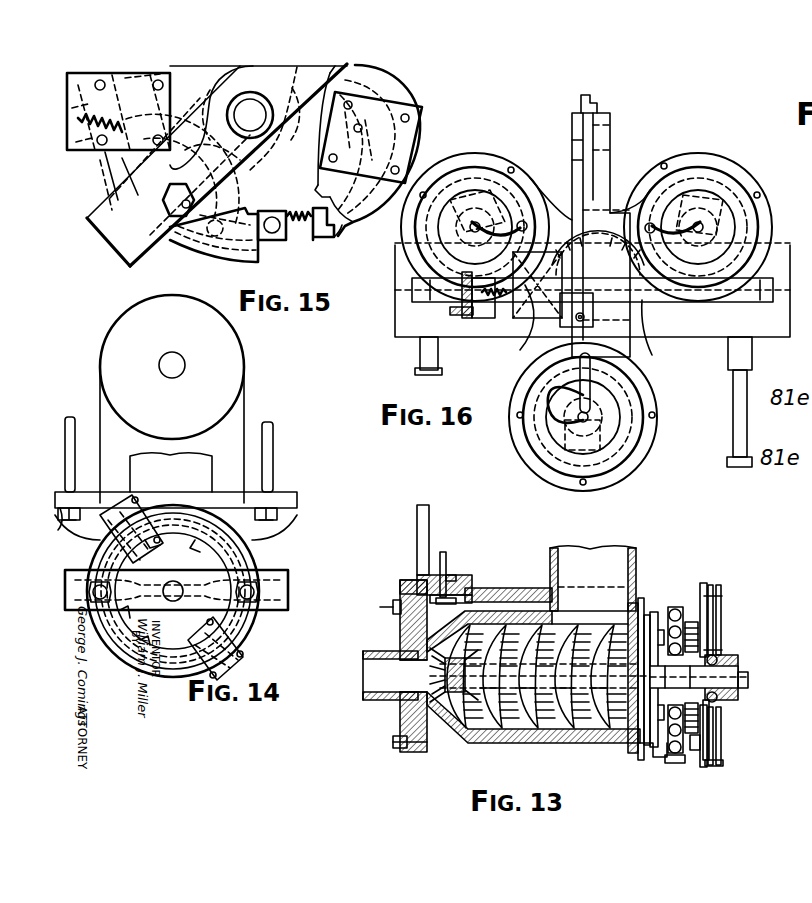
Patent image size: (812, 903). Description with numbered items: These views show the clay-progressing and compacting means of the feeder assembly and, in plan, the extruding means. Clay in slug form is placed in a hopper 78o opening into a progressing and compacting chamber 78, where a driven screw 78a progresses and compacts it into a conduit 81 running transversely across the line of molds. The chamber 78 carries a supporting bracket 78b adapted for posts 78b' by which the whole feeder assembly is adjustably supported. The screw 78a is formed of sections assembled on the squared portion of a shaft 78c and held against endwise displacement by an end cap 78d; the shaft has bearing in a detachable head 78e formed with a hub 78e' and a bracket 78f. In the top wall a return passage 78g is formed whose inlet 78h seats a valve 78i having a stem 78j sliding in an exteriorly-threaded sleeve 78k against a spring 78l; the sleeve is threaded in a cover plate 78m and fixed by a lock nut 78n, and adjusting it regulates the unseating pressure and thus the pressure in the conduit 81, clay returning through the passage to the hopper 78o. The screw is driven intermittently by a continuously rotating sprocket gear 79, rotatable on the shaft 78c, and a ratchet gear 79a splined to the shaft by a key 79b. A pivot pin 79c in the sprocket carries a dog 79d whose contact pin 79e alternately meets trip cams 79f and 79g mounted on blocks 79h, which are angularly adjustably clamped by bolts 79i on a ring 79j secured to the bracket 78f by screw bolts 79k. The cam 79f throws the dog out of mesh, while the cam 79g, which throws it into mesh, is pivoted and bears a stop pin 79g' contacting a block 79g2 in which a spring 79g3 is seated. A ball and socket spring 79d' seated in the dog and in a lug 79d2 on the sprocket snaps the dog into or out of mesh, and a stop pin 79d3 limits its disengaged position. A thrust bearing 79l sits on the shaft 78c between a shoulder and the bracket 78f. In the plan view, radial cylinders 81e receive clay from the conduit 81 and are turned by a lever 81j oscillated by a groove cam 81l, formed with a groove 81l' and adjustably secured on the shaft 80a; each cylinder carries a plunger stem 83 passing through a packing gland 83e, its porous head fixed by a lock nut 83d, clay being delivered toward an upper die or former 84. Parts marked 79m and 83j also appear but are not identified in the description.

In FIG. 13, the progressing and compacting chamber 78 is at (495, 726).
In FIG. 13, the driven screw 78a is at (560, 648).
In FIG. 14, the supporting bracket 78b is at (175, 518).
In FIG. 14, the posts 78b' is at (165, 430).
In FIG. 15, the shaft 78c is at (252, 112).
In FIG. 14, the shaft 78c is at (176, 582).
In FIG. 13, the shaft 78c is at (746, 685).
In FIG. 13, the end cap 78d is at (445, 676).
In FIG. 13, the detachable head 78e is at (647, 632).
In FIG. 13, the hub 78e' is at (686, 631).
In FIG. 13, the bracket 78f is at (714, 658).
In FIG. 13, the return passage 78g is at (510, 588).
In FIG. 13, the inlet 78h is at (400, 638).
In FIG. 13, the valve 78i is at (393, 607).
In FIG. 13, the stem 78j is at (430, 575).
In FIG. 13, the exteriorly-threaded sleeve 78k is at (425, 575).
In FIG. 13, the spring 78l is at (420, 600).
In FIG. 13, the cover plate 78m is at (458, 598).
In FIG. 13, the lock nut 78n is at (446, 575).
In FIG. 14, the hopper 78o is at (171, 472).
In FIG. 13, the hopper 78o is at (578, 548).
In FIG. 13, the sprocket gear 79 is at (676, 607).
In FIG. 13, the ratchet gear 79a is at (704, 583).
In FIG. 13, the key 79b is at (712, 640).
In FIG. 15, the pivot pin 79c is at (210, 247).
In FIG. 15, the dog 79d is at (200, 244).
In FIG. 15, the ball and socket spring 79d' is at (289, 246).
In FIG. 15, the lug 79d2 is at (336, 240).
In FIG. 13, the lug 79d2 is at (678, 762).
In FIG. 15, the stop pin 79d3 is at (222, 183).
In FIG. 13, the contact pin 79e is at (700, 752).
In FIG. 15, the trip cam 79f is at (326, 152).
In FIG. 15, the trip cam 79g is at (124, 92).
In FIG. 15, the stop pin 79g' is at (115, 93).
In FIG. 15, the block 79g2 is at (122, 158).
In FIG. 15, the spring 79g3 is at (128, 187).
In FIG. 15, the blocks 79h is at (173, 93).
In FIG. 14, the blocks 79h is at (236, 656).
In FIG. 15, the bolts 79i is at (418, 107).
In FIG. 13, the bolts 79i is at (718, 610).
In FIG. 15, the ring 79j is at (398, 80).
In FIG. 13, the ring 79j is at (712, 748).
In FIG. 15, the screw bolts 79k is at (108, 240).
In FIG. 13, the screw bolts 79k is at (748, 668).
In FIG. 13, the thrust bearing 79l is at (716, 700).
In FIG. 14, the belt 79m is at (103, 339).
In FIG. 16, the shaft 80a is at (757, 302).
In FIG. 14, the shaft 80a is at (173, 355).
In FIG. 16, the conduit 81 is at (778, 250).
In FIG. 13, the conduit 81 is at (363, 677).
In FIG. 16, the radial cylinders 81e is at (703, 160).
In FIG. 16, the lever 81j is at (527, 333).
In FIG. 16, the groove cam 81l is at (544, 296).
In FIG. 16, the groove 81l' is at (492, 330).
In FIG. 16, the stem 83 is at (804, 312).
In FIG. 13, the lock nut 83d is at (811, 526).
In FIG. 16, the packing gland 83e is at (811, 427).
In FIG. 16, the rod 83j is at (800, 369).
In FIG. 13, the upper die or former 84 is at (795, 582).